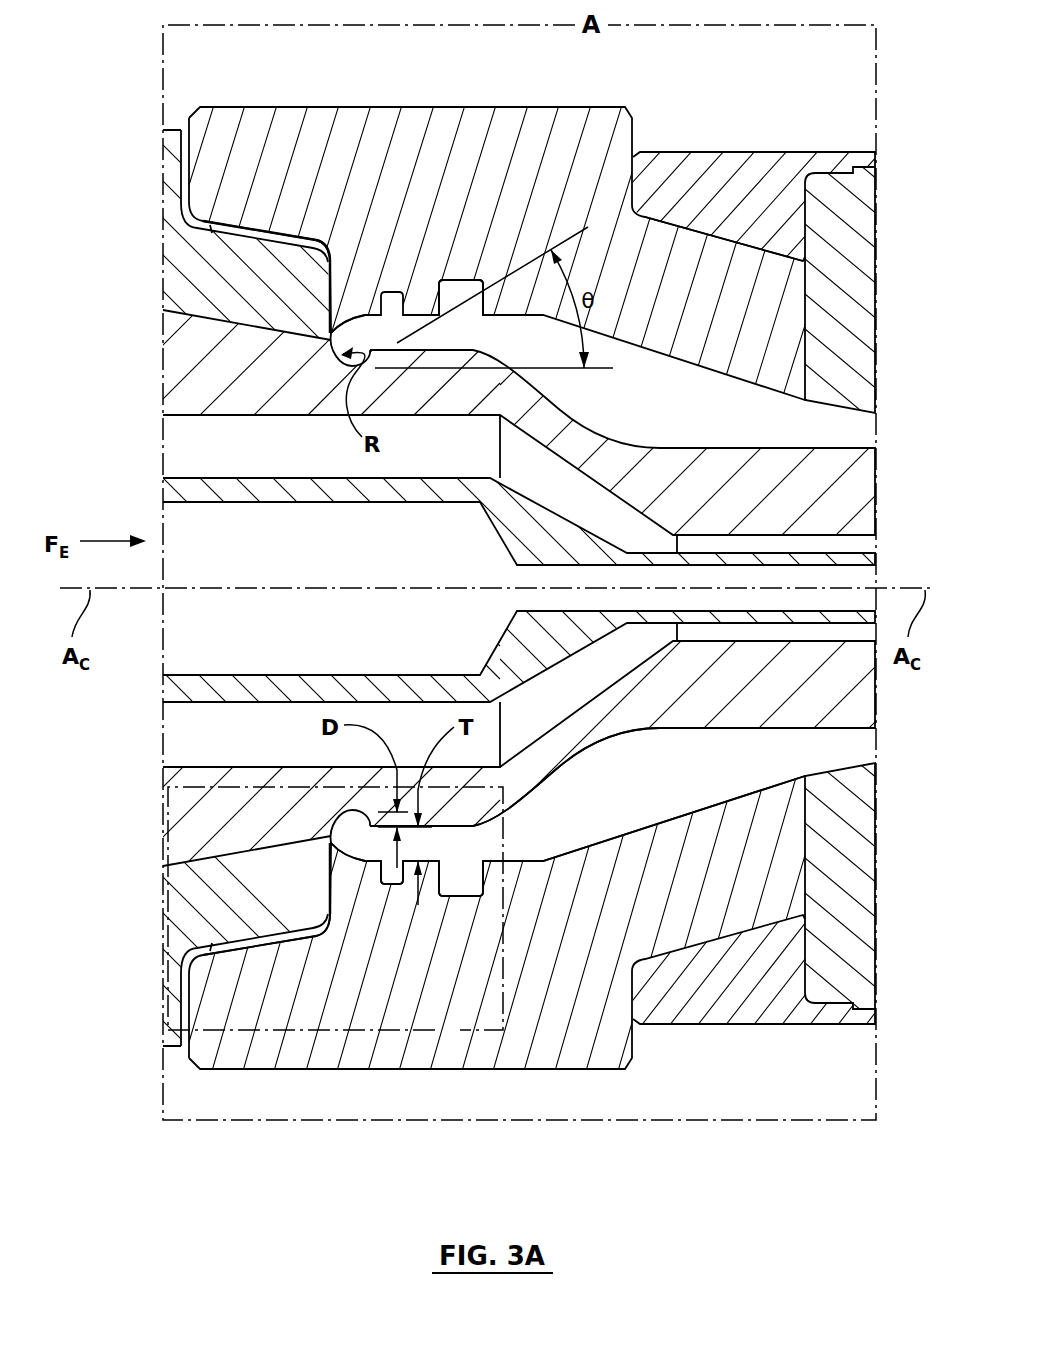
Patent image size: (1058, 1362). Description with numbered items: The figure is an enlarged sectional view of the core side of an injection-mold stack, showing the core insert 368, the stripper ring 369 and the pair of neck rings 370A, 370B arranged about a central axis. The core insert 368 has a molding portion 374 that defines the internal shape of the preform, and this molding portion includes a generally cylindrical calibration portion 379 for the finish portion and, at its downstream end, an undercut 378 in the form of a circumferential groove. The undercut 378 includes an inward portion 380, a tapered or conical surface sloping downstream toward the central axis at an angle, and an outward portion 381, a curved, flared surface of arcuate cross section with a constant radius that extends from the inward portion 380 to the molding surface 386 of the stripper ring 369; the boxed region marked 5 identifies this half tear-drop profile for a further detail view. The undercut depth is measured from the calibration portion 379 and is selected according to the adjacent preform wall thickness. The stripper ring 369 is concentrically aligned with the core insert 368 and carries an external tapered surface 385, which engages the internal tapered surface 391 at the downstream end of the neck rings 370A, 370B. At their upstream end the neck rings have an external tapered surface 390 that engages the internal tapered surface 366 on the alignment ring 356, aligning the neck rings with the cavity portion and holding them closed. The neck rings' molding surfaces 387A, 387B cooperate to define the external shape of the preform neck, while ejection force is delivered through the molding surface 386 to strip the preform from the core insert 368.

The alignment ring 356 is at (673, 167).
The internal tapered surface 366 is at (768, 280).
The core insert 368 is at (845, 707).
The stripper ring 369 is at (175, 267).
The neck ring 370A is at (387, 135).
The neck ring 370B is at (578, 1047).
The molding portion 374 is at (720, 735).
The undercut 378 is at (333, 870).
The calibration portion 379 is at (440, 826).
The inward portion 380 is at (401, 889).
The outward portion 381 is at (333, 860).
The external tapered surface 385 is at (292, 234).
The molding surface 386 is at (336, 330).
The molding surface 387A is at (443, 278).
The molding surface 387B is at (470, 899).
The external tapered surface 390 is at (772, 268).
The internal tapered surface 391 is at (240, 238).
The detail region of FIG. 5 is at (335, 916).